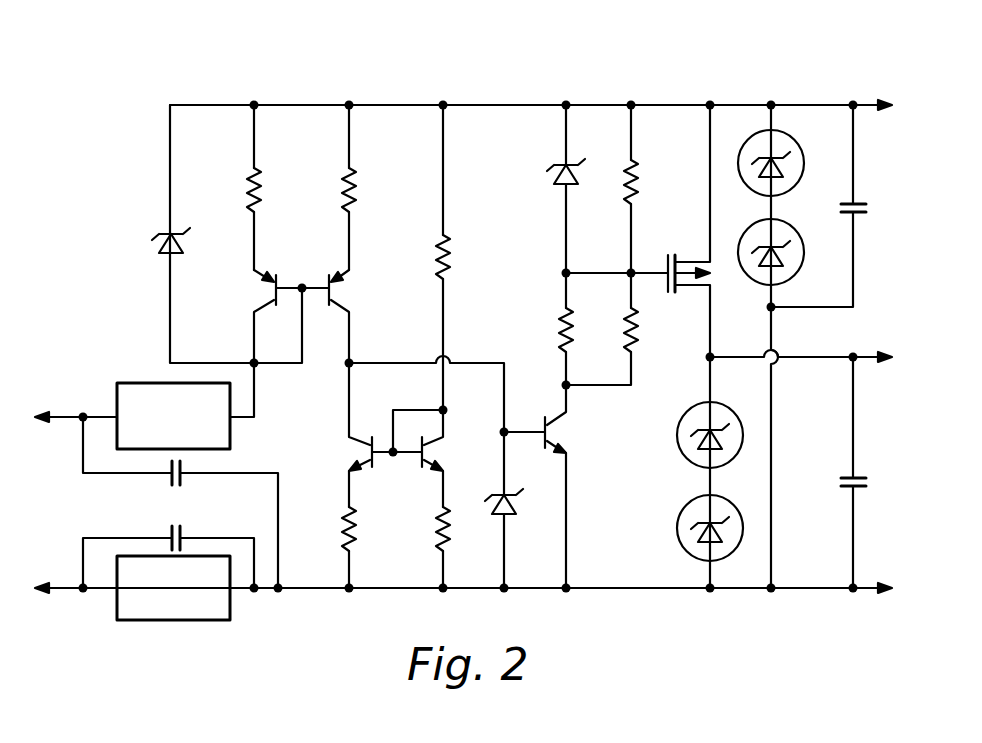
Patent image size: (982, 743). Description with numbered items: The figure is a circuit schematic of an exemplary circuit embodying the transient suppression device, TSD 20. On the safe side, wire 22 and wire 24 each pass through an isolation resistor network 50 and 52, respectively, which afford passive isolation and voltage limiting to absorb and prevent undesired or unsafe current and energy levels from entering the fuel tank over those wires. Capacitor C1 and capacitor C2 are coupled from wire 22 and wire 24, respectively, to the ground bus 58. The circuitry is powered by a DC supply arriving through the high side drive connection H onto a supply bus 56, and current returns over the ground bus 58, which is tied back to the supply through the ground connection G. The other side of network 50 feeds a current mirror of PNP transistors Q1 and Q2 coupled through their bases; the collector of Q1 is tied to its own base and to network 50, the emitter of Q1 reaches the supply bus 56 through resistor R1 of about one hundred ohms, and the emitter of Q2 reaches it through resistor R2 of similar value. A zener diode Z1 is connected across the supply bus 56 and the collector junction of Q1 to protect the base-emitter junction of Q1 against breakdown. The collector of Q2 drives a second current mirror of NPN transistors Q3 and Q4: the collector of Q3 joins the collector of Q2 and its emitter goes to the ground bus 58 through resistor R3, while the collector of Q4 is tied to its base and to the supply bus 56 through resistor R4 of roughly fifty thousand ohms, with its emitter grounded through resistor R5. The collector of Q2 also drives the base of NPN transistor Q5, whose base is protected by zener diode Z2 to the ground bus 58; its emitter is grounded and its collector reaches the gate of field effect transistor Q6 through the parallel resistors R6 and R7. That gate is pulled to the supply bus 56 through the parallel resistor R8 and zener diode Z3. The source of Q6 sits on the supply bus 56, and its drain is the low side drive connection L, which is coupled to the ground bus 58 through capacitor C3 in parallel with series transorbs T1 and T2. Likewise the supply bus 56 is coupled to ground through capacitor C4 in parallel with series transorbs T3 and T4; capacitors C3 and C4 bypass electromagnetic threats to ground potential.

The transient suppression device 20 is at (118, 170).
The wire 22 is at (60, 416).
The wire 24 is at (60, 586).
The isolation resistor network 50 is at (138, 382).
The isolation resistor network 52 is at (168, 621).
The supply bus 56 is at (518, 104).
The ground bus 58 is at (637, 590).
The resistor R1 is at (250, 192).
The resistor R2 is at (346, 192).
The resistor R3 is at (346, 532).
The resistor R4 is at (447, 263).
The resistor R5 is at (440, 532).
The resistor R6 is at (562, 334).
The resistor R7 is at (636, 330).
The resistor R8 is at (635, 185).
The PNP transistor Q1 is at (268, 290).
The PNP transistor Q2 is at (336, 301).
The NPN transistor Q3 is at (366, 451).
The NPN transistor Q4 is at (425, 458).
The NPN transistor Q5 is at (558, 450).
The field effect transistor Q6 is at (669, 258).
The zener diode Z1 is at (164, 242).
The zener diode Z2 is at (500, 505).
The zener diode Z3 is at (556, 182).
The transorb T1 is at (678, 443).
The transorb T2 is at (678, 516).
The transorb T3 is at (802, 172).
The transorb T4 is at (802, 252).
The capacitor C1 is at (178, 486).
The capacitor C2 is at (176, 526).
The capacitor C3 is at (858, 482).
The capacitor C4 is at (866, 212).
The high side drive connection H is at (869, 89).
The low side drive connection L is at (799, 344).
The ground connection G is at (869, 574).